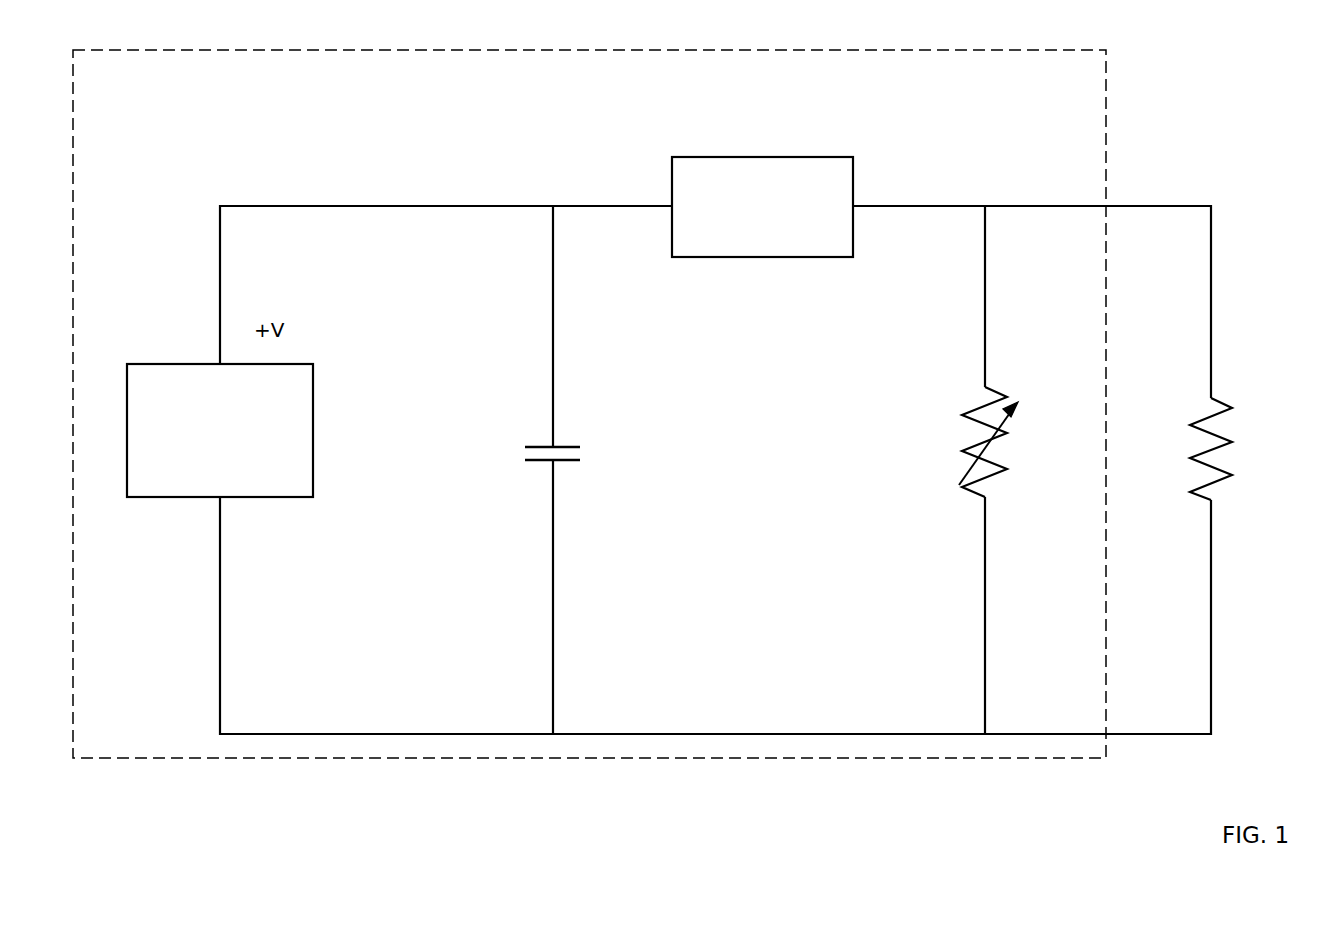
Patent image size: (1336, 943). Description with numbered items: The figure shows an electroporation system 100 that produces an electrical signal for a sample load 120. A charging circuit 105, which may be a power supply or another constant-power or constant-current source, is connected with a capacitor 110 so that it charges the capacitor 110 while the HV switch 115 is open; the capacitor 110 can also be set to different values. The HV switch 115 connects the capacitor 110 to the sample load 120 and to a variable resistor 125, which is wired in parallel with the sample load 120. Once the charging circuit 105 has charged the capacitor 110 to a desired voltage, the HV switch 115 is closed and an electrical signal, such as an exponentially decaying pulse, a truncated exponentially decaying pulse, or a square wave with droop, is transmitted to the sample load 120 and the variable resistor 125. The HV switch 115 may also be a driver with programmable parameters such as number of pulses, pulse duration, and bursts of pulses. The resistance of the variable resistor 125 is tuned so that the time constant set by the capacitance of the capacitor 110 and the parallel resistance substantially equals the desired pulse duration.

The electroporation system 100 is at (1104, 86).
The charging circuit 105 is at (178, 364).
The capacitor 110 is at (513, 447).
The HV switch 115 is at (733, 157).
The sample load 120 is at (1251, 435).
The variable resistor 125 is at (944, 459).